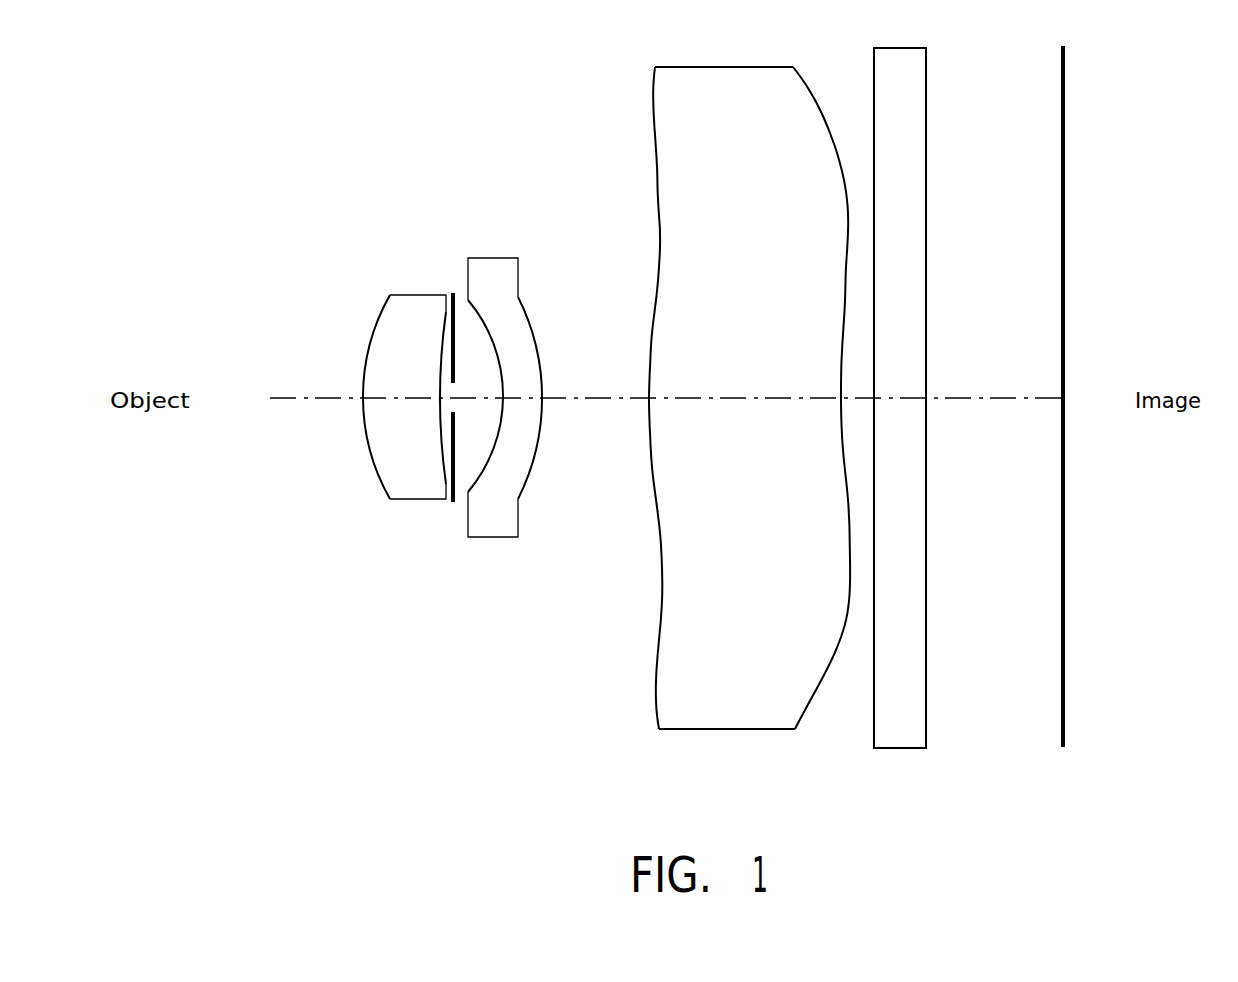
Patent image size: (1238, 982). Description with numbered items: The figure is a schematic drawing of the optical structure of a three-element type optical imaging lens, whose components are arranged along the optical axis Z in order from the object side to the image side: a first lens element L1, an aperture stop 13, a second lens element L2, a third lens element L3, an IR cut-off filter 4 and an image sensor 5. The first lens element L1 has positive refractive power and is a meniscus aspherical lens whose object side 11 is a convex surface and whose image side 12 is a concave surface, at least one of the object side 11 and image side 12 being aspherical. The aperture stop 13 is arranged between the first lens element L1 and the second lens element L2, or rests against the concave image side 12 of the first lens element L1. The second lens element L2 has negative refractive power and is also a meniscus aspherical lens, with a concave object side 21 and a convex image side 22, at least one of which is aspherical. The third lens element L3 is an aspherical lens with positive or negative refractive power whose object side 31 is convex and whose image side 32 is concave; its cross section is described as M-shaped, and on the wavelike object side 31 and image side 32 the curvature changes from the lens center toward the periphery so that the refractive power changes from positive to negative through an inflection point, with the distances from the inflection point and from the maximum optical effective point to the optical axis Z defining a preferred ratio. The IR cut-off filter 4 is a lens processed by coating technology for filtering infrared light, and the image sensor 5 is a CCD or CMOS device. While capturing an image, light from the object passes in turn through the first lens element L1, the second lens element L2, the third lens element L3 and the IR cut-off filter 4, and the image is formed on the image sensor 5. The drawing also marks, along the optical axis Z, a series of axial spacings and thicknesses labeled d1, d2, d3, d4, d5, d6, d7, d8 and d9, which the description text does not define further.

The first lens element L1 is at (392, 404).
The second lens element L2 is at (518, 394).
The third lens element L3 is at (726, 401).
The object side of the first lens element 11 is at (377, 463).
The image side of the first lens element 12 is at (452, 503).
The aperture stop 13 is at (457, 457).
The object side of the second lens element 21 is at (477, 482).
The image side of the second lens element 22 is at (537, 469).
The object side of the third lens element 31 is at (658, 583).
The image side of the third lens element 32 is at (823, 689).
The IR cut-off filter 4 is at (900, 60).
The image sensor 5 is at (1065, 140).
The optical axis Z is at (653, 400).
The distance d1 is at (363, 395).
The distance d2 is at (408, 394).
The distance d3 is at (477, 394).
The distance d4 is at (520, 394).
The distance d5 is at (585, 394).
The distance d6 is at (745, 394).
The distance d7 is at (857, 394).
The distance d8 is at (899, 394).
The distance d9 is at (995, 394).